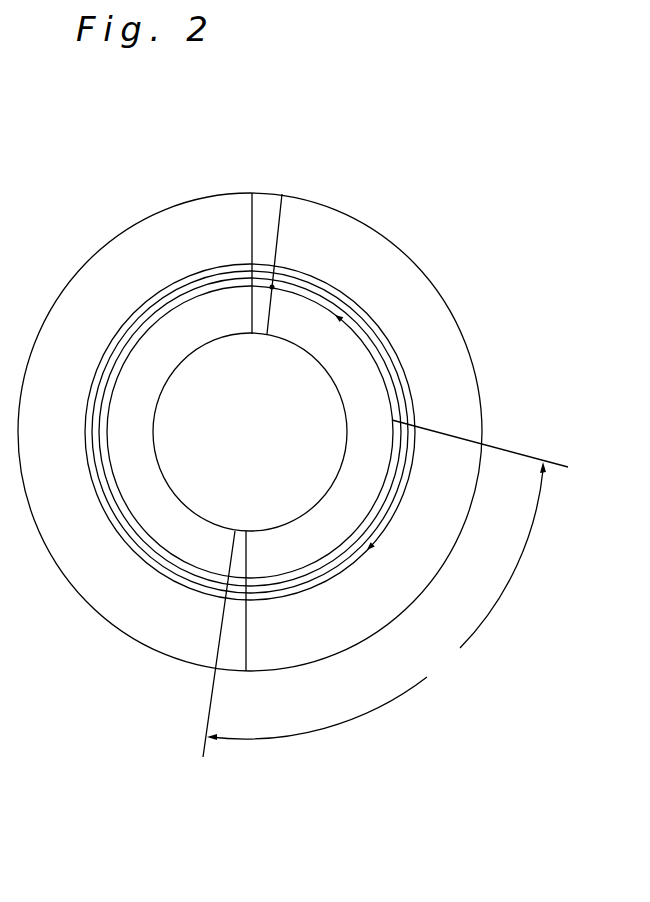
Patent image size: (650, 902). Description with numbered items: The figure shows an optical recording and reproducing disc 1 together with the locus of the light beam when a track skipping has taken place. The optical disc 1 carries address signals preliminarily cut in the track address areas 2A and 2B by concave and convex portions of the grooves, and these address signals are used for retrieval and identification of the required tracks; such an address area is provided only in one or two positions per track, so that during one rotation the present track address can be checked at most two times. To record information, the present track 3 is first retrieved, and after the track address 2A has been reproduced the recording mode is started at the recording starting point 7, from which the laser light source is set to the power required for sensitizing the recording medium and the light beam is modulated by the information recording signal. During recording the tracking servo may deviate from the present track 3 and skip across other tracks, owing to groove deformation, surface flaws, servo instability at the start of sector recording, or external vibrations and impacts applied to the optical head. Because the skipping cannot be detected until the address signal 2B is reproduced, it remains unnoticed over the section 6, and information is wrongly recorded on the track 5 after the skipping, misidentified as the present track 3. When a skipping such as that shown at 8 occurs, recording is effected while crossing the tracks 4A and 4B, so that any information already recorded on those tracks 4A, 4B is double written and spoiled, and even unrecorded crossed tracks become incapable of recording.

The optical disc 1 is at (446, 302).
The track address area 2A is at (269, 196).
The track address area 2B is at (214, 666).
The present track 3 is at (375, 363).
The track 4A is at (364, 332).
The track 4B is at (393, 360).
The track after skipping 5 is at (414, 398).
The section 6 is at (376, 601).
The recording starting point 7 is at (273, 290).
The track skipping locus 8 is at (419, 426).